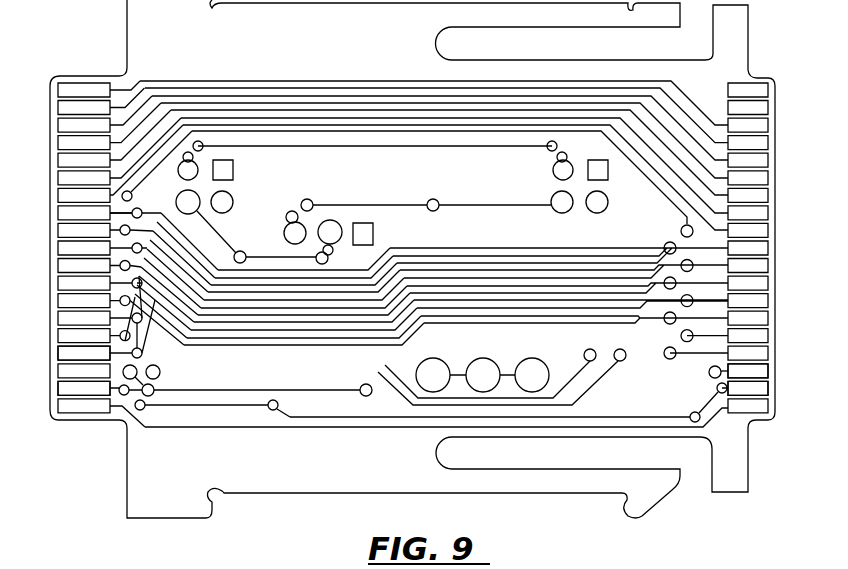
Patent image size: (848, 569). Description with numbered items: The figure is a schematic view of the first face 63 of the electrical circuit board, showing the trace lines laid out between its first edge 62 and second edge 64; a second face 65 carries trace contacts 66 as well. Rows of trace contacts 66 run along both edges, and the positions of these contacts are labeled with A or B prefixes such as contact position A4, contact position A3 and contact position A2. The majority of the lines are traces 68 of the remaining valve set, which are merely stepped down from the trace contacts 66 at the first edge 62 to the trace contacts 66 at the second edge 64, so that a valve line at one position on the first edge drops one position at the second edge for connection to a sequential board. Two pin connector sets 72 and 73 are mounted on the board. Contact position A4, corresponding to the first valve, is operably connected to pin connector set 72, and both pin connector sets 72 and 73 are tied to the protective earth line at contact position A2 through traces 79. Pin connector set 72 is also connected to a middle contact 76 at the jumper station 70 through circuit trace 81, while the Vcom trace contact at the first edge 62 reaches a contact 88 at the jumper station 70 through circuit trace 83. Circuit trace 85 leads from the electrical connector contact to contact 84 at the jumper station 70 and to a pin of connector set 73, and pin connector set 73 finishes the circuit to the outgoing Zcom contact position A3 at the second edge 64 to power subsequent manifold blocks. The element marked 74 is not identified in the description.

The first edge 62 is at (48, 86).
The second edge 64 is at (777, 78).
The trace contacts 66 is at (62, 160).
The traces 68 is at (272, 108).
The jumper station 70 is at (332, 180).
The pin connector set 72 is at (236, 180).
The pin connector set 73 is at (553, 176).
The via 74 is at (177, 200).
The middle contact 76 is at (335, 227).
The traces 79 is at (403, 147).
The first face 63 is at (470, 186).
The circuit trace 81 is at (214, 228).
The contact 84 is at (283, 221).
The second face 65 is at (272, 290).
The contact 88 is at (373, 234).
The circuit trace 85 is at (500, 210).
The circuit trace 83 is at (313, 395).
The contact position A4 is at (62, 353).
The contact position A2 is at (62, 389).
The contact position A3 is at (766, 372).